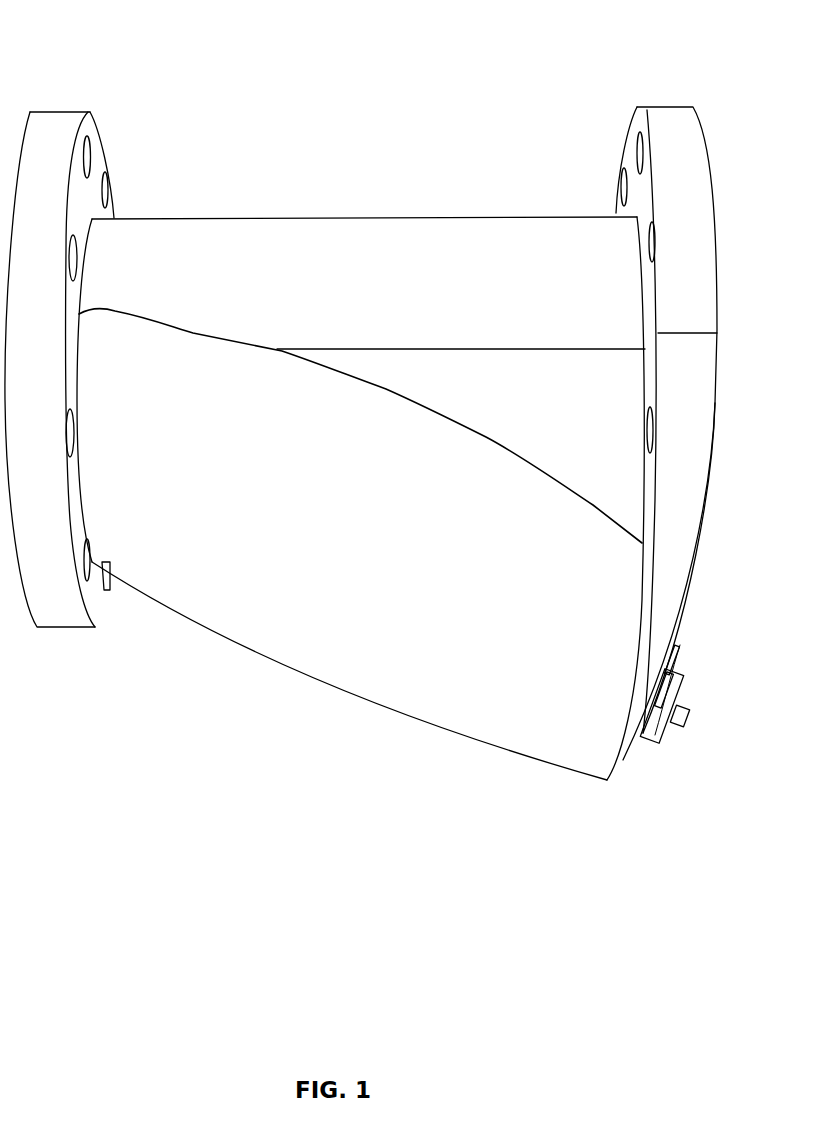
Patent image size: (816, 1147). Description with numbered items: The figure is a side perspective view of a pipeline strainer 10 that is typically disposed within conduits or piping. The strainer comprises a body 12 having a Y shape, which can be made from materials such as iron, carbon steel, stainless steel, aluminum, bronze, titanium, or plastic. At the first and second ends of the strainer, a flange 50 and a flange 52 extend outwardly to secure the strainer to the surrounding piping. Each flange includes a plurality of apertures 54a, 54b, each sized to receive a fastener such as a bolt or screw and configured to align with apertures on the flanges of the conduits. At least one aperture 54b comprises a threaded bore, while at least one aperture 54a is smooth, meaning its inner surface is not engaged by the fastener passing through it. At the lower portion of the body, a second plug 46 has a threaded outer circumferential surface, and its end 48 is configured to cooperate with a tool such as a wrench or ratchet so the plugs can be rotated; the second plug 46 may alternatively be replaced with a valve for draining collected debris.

The pipeline strainer 10 is at (507, 107).
The body 12 is at (355, 263).
The flange 50 is at (58, 126).
The flange 52 is at (672, 118).
The aperture 54a is at (107, 183).
The aperture 54b is at (90, 583).
The second plug 46 is at (680, 648).
The end 48 is at (680, 715).